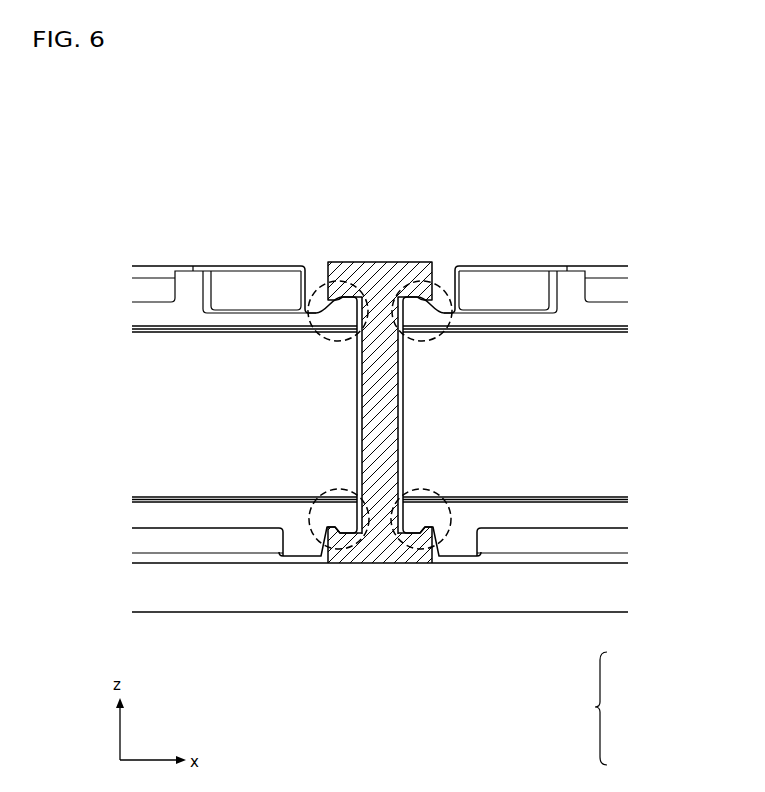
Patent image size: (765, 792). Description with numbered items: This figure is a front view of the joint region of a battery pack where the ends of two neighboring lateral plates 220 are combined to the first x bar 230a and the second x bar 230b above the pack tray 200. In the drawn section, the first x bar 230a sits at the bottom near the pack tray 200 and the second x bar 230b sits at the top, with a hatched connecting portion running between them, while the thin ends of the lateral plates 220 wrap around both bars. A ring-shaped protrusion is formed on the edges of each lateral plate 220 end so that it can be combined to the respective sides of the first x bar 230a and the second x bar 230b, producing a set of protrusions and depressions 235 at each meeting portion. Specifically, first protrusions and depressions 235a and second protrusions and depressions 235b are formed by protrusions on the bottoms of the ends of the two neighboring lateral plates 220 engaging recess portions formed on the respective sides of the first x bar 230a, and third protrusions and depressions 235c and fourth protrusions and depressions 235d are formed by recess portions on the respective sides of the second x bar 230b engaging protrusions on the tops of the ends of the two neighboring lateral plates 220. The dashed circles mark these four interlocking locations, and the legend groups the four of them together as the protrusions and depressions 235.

The pack tray 200 is at (493, 595).
The lateral plate 220 is at (150, 421).
The first x bar 230a is at (386, 548).
The second x bar 230b is at (383, 272).
The protrusions and depressions 235 is at (602, 708).
The first protrusions and depressions 235a is at (324, 492).
The second protrusions and depressions 235b is at (432, 492).
The third protrusions and depressions 235c is at (325, 285).
The fourth protrusions and depressions 235d is at (417, 282).